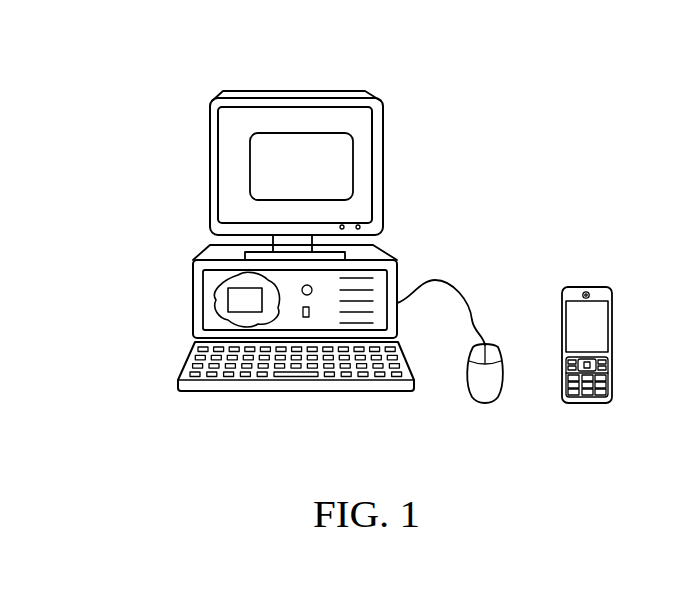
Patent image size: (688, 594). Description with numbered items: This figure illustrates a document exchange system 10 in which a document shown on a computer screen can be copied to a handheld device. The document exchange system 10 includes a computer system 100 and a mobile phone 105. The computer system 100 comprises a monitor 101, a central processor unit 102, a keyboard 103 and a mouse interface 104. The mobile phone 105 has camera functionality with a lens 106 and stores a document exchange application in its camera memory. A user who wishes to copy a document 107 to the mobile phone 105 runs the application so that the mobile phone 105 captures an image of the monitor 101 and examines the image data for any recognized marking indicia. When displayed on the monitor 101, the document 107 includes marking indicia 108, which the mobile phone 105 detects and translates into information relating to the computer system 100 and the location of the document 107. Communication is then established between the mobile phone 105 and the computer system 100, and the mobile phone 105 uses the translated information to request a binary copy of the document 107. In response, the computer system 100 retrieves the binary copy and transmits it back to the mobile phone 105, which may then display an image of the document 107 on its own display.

The document exchange system 10 is at (190, 58).
The computer system 100 is at (102, 350).
The monitor 101 is at (209, 163).
The central processor unit 102 is at (213, 300).
The keyboard 103 is at (257, 392).
The mouse interface 104 is at (488, 402).
The mobile phone 105 is at (588, 403).
The lens 106 is at (587, 289).
The document 107 is at (353, 163).
The marking indicia 108 is at (298, 143).